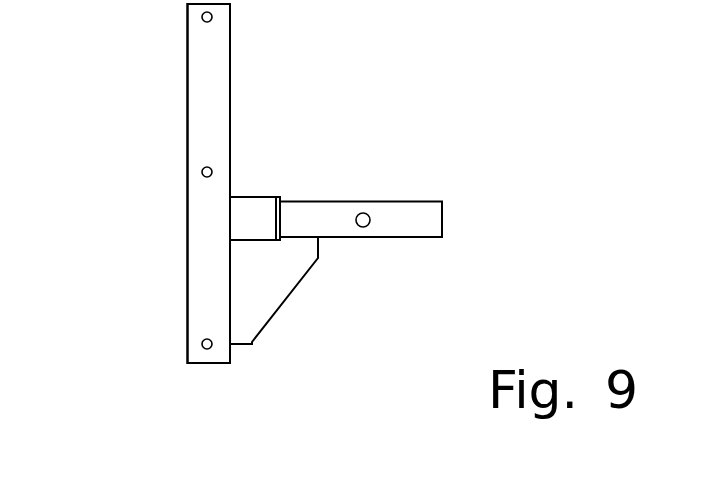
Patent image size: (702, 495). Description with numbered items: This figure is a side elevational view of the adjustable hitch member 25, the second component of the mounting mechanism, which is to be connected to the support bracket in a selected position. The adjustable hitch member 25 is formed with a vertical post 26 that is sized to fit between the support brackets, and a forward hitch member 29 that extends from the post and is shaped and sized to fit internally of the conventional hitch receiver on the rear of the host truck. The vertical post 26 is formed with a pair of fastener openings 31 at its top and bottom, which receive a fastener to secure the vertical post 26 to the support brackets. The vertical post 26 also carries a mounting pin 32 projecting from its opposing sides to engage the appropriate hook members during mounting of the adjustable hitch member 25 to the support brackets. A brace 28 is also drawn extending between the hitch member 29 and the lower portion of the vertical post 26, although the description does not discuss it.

The adjustable hitch member 25 is at (360, 135).
The vertical post 26 is at (218, 133).
The brace 28 is at (265, 295).
The hitch member 29 is at (407, 213).
The fastener openings 31 is at (201, 17).
The mounting pin 32 is at (201, 172).